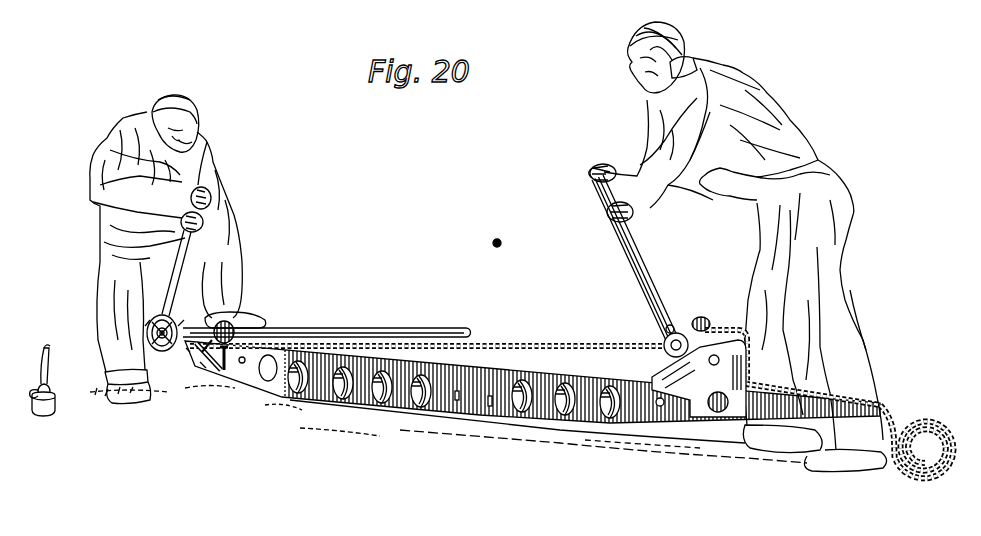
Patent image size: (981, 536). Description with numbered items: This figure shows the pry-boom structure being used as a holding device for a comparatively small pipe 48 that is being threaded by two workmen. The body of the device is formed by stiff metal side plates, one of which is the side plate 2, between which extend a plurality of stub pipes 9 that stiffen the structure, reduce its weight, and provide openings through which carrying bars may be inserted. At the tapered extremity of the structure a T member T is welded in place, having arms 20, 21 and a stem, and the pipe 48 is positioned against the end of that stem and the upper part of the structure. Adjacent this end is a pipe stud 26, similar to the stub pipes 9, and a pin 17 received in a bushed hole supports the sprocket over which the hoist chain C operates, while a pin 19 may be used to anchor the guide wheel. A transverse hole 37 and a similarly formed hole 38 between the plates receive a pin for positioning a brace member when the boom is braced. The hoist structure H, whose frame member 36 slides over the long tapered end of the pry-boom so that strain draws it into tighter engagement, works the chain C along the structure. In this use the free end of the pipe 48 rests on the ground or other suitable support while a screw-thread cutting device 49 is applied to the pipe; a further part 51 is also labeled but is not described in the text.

The side plate 2 is at (468, 413).
The stub pipes 9 is at (343, 366).
The pin 17 is at (214, 372).
The pin 19 is at (236, 372).
The arm 20 is at (205, 385).
The arm 21 is at (188, 342).
The pipe stud 26 is at (244, 358).
The frame member 36 is at (717, 340).
The transverse hole 37 is at (490, 406).
The hole 38 is at (456, 398).
The pipe 48 is at (370, 328).
The screw-thread cutting device 49 is at (165, 352).
The lug 51 is at (190, 360).
The hoist chain C is at (572, 345).
The hoist structure H is at (659, 338).
The T member T is at (206, 355).